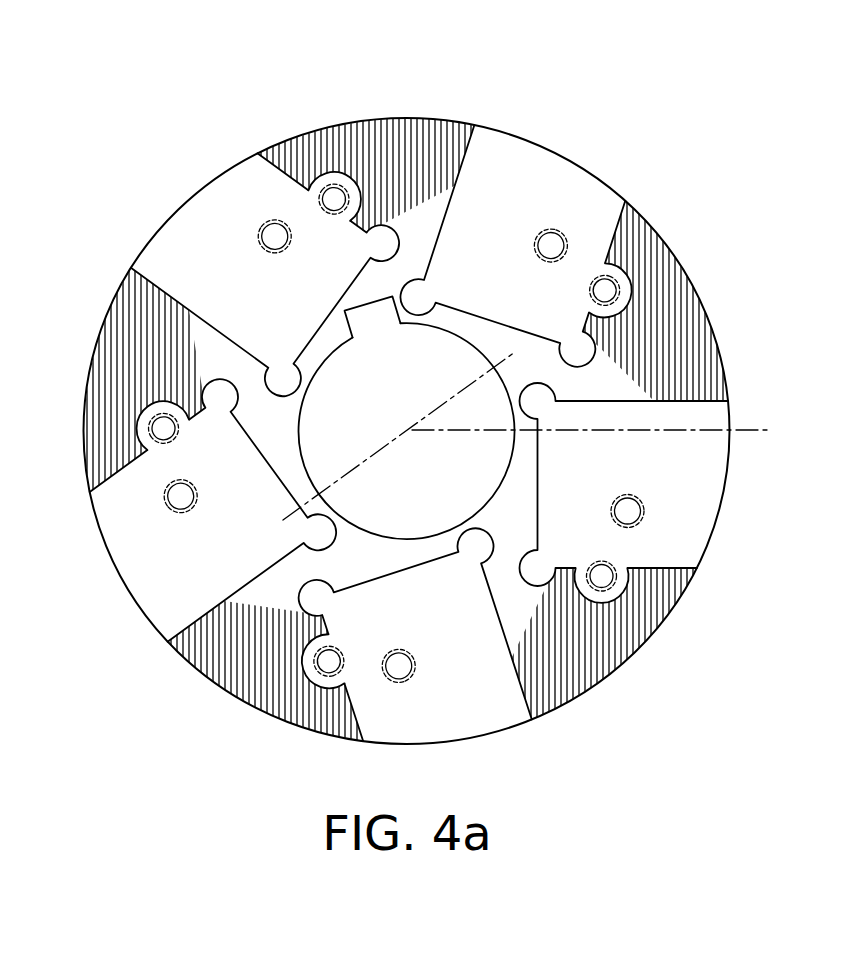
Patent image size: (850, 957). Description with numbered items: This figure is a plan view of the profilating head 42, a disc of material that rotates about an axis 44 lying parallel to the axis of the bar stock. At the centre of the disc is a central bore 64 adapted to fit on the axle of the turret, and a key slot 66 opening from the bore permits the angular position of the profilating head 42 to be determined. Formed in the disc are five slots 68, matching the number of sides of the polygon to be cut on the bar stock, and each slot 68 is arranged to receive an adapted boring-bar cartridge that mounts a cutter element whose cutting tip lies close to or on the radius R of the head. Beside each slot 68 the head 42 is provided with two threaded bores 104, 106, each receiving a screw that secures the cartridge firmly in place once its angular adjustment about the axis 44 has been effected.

The profilating head 42 is at (690, 268).
The axis 44 is at (405, 434).
The central bore 64 is at (305, 458).
The key slot 66 is at (370, 305).
The slot 68 is at (465, 156).
The threaded bore 104 is at (628, 497).
The threaded bore 106 is at (614, 584).
The radius R is at (757, 432).